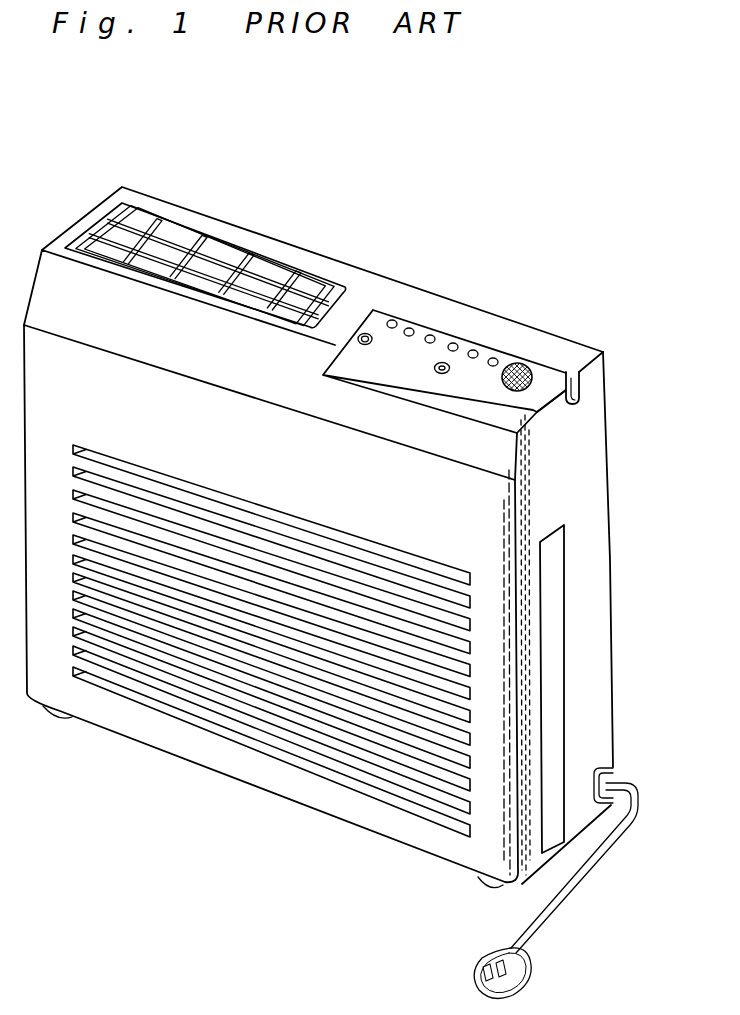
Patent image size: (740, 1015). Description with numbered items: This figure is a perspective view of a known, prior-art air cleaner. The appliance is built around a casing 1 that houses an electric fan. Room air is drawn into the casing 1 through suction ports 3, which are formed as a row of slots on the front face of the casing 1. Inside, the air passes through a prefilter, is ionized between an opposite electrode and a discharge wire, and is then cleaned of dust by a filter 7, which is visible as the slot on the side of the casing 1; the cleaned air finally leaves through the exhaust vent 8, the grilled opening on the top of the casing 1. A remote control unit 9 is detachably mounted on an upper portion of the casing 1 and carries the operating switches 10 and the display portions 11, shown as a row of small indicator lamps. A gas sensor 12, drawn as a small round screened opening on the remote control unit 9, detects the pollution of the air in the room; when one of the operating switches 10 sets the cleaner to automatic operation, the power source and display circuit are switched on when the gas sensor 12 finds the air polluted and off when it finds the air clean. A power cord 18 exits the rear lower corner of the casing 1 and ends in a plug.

The casing 1 is at (283, 775).
The suction ports 3 is at (160, 690).
The filter 7 is at (555, 648).
The exhaust vent 8 is at (270, 252).
The remote control unit 9 is at (378, 312).
The operating switches 10 is at (442, 375).
The display portions 11 is at (455, 344).
The gas sensor 12 is at (520, 364).
The power cord 18 is at (532, 923).